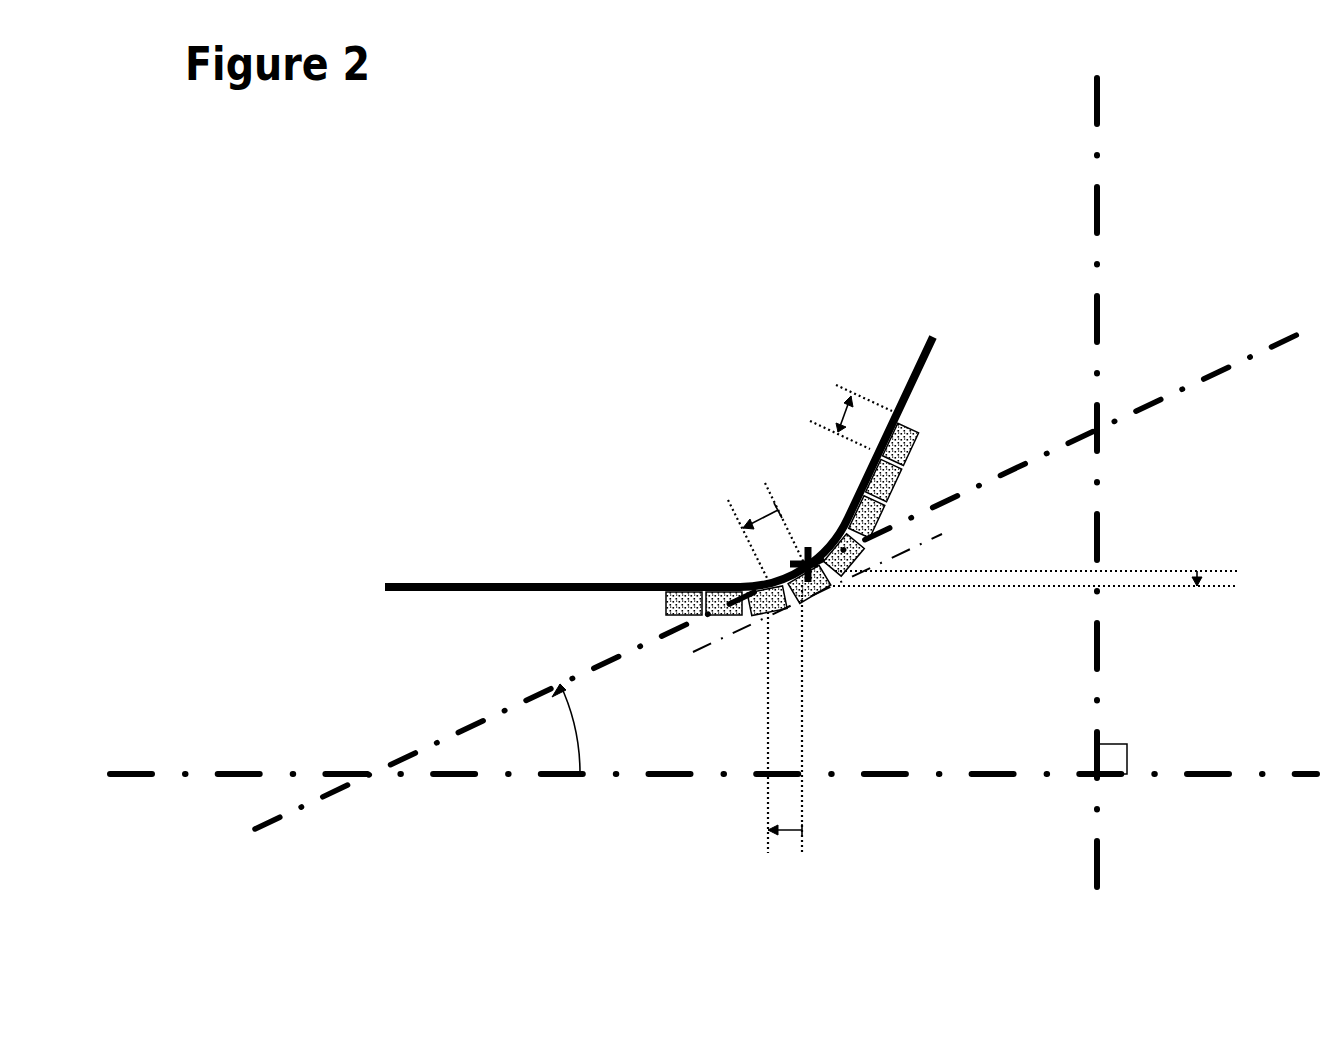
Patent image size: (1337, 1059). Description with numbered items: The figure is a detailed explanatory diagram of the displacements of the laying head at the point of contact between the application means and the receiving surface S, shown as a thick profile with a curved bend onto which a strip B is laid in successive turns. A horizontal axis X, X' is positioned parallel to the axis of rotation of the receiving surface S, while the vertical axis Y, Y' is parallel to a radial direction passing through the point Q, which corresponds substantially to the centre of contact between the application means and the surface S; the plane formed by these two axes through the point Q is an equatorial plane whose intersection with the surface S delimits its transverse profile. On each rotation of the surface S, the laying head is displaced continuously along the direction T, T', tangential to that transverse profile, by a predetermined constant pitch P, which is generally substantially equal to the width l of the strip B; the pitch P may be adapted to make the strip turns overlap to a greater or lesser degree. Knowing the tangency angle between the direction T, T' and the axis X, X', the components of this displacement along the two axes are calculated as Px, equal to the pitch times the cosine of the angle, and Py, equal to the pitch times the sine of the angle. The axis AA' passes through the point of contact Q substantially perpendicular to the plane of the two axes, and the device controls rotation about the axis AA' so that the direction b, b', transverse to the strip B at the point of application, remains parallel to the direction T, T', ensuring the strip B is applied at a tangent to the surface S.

The receiving surface S is at (463, 580).
The strip B is at (734, 477).
The pitch P is at (766, 531).
The width of the strip l is at (851, 417).
The direction bb' b is at (829, 601).
The direction bb' b' is at (829, 589).
The axis AA' is at (874, 578).
The point Q is at (822, 583).
The displacement Px is at (786, 734).
The displacement Py is at (1053, 582).
The direction TT' T is at (780, 586).
The direction TT' T' is at (780, 586).
The axis XX' X is at (717, 752).
The axis XX' X' is at (713, 752).
The axis YY' Y is at (1118, 490).
The axis YY' Y' is at (1116, 490).